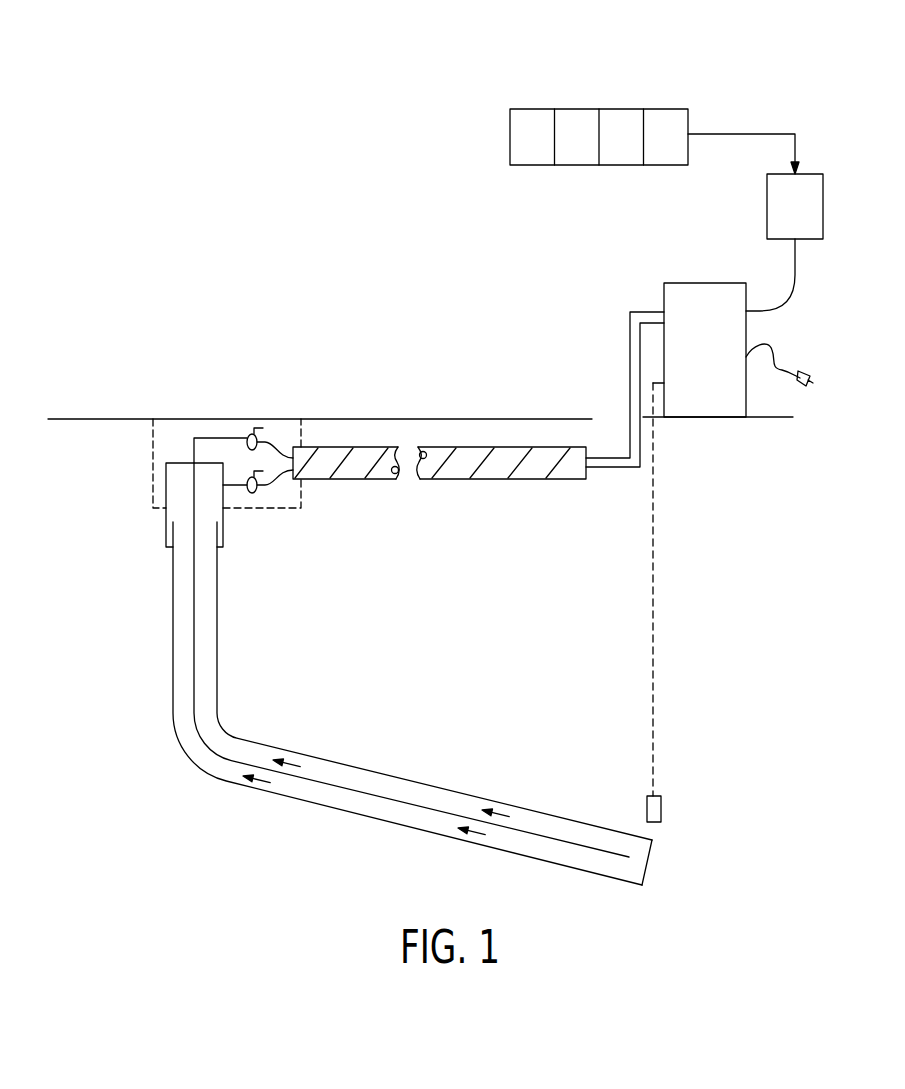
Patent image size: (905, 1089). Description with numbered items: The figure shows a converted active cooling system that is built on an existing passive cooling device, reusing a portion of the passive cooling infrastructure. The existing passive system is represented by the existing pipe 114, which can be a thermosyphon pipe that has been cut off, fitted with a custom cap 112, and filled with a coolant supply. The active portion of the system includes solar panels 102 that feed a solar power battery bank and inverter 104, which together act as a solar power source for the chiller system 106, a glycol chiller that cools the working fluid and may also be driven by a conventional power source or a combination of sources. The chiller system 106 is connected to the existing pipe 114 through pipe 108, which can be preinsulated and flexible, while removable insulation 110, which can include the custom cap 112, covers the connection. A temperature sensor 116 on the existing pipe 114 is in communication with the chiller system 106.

The solar panels 102 is at (623, 108).
The solar power battery bank and inverter 104 is at (767, 206).
The chiller system 106 is at (746, 336).
The pipe 108 is at (374, 433).
The removable insulation 110 is at (207, 416).
The custom cap 112 is at (232, 528).
The existing pipe 114 is at (230, 637).
The temperature sensor 116 is at (666, 647).